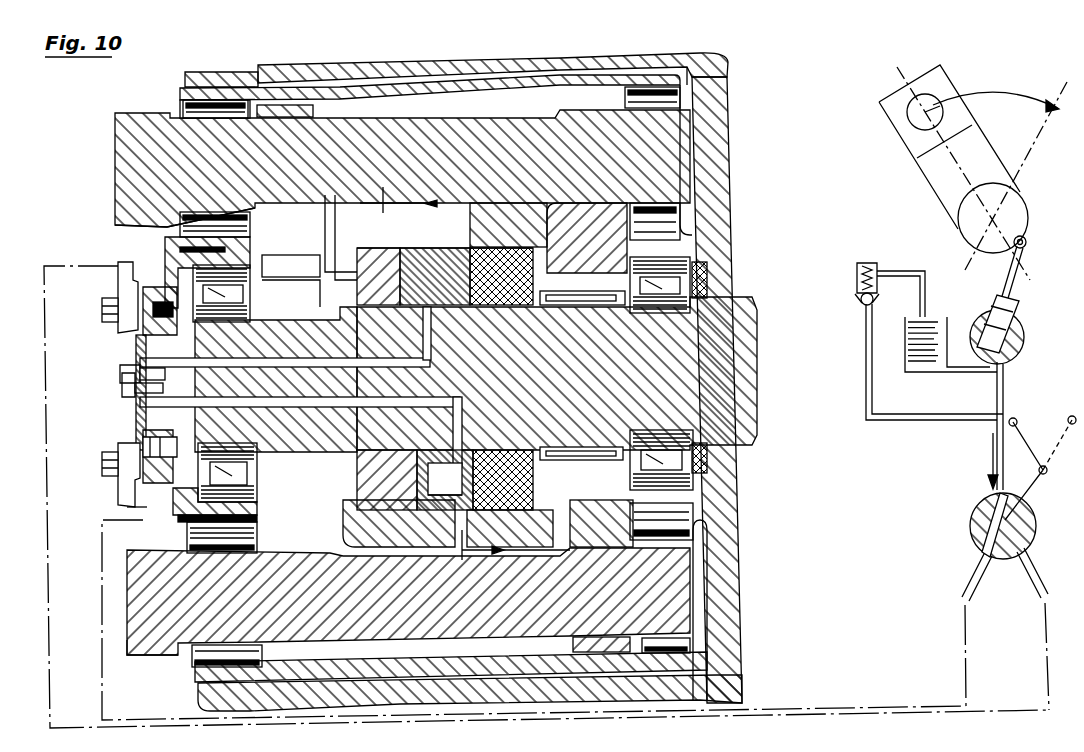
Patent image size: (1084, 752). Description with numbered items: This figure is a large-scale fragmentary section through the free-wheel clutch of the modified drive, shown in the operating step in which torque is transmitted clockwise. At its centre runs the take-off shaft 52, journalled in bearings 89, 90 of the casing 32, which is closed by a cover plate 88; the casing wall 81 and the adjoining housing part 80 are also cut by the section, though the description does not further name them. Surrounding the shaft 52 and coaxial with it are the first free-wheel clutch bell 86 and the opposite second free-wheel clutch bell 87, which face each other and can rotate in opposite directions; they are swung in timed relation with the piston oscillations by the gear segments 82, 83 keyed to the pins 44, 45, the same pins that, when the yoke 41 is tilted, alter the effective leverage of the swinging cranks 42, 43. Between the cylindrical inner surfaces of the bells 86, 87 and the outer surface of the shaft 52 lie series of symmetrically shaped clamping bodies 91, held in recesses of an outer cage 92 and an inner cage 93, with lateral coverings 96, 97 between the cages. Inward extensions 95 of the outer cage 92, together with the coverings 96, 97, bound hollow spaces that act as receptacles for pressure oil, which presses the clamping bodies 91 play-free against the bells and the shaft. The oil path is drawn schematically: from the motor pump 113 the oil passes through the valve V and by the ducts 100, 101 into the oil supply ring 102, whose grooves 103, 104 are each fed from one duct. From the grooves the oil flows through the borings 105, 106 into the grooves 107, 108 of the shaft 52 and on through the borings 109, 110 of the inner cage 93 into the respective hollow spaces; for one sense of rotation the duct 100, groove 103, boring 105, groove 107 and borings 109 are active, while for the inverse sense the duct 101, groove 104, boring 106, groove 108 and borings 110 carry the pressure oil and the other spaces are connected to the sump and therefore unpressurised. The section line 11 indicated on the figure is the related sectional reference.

The oil flow passage 11 is at (447, 373).
The casing 32 is at (703, 58).
The yoke 41 is at (713, 678).
The swinging crank 42 is at (120, 670).
The swinging crank 43 is at (145, 133).
The pin 44 is at (425, 627).
The pin 45 is at (400, 133).
The take-off shaft 52 is at (657, 343).
The block lower edge 80 is at (168, 222).
The housing right wall 81 is at (724, 385).
The gear segment 82 is at (640, 500).
The gear segment 83 is at (235, 205).
The first free-wheel clutch bell 86 is at (530, 221).
The second free-wheel clutch bell 87 is at (360, 530).
The cover plate 88 is at (712, 566).
The bearing 89 is at (185, 268).
The bearing 90 is at (700, 470).
The clamping body 91 is at (515, 272).
The outer cage 92 is at (432, 248).
The inner cage 93 is at (450, 440).
The inward extension 95 is at (470, 255).
The lateral covering 96 is at (445, 479).
The lateral covering 97 is at (445, 489).
The duct 100 is at (128, 287).
The duct 101 is at (115, 468).
The oil supply ring 102 is at (145, 512).
The groove 103 is at (140, 418).
The groove 104 is at (160, 440).
The boring 105 is at (138, 398).
The boring 106 is at (160, 367).
The groove 107 is at (465, 313).
The groove 108 is at (300, 305).
The boring 109 is at (470, 450).
The boring 110 is at (548, 276).
The motor pump 113 is at (1005, 318).
The valve V is at (979, 493).